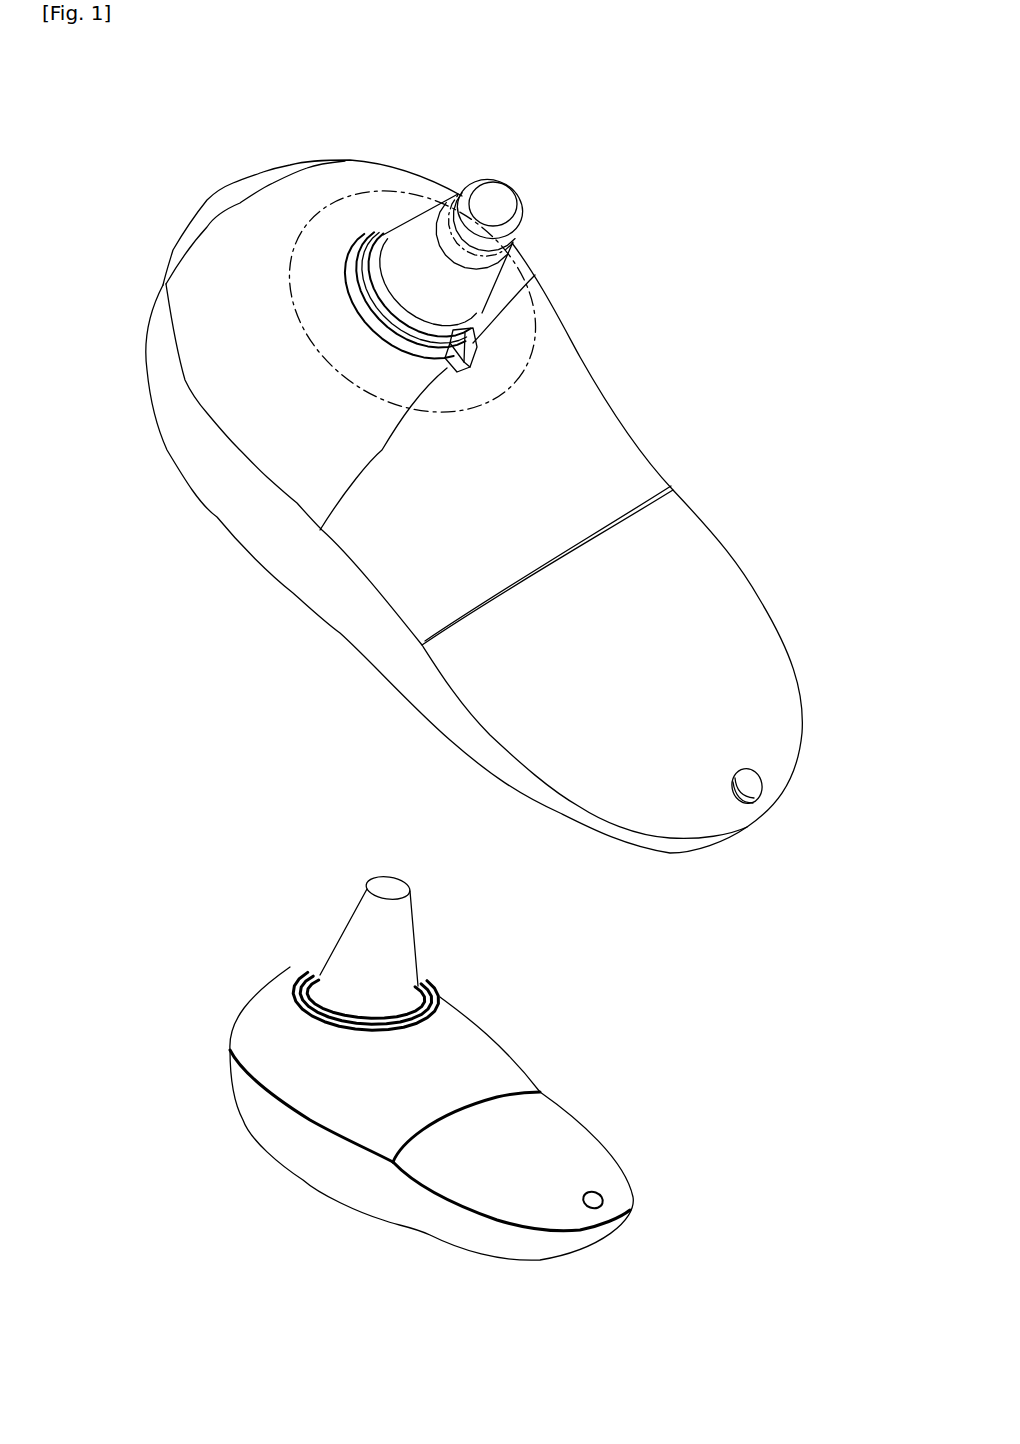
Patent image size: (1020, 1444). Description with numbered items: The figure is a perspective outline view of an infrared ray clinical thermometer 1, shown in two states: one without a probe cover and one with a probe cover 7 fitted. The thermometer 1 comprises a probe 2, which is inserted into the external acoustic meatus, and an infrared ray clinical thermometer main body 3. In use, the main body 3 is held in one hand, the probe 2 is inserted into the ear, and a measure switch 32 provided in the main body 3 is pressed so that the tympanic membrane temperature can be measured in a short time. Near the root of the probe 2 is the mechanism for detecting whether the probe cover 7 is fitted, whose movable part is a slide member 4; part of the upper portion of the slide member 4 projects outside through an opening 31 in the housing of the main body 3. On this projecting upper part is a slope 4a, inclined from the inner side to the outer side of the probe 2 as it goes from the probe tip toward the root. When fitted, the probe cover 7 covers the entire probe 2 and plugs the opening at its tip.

The infrared ray clinical thermometer 1 is at (646, 159).
The probe 2 is at (420, 237).
The infrared ray clinical thermometer main body 3 is at (553, 337).
The opening 31 is at (320, 530).
The measure switch 32 is at (207, 227).
The slide member 4 is at (477, 370).
The slope 4a is at (535, 275).
The probe cover 7 is at (363, 932).